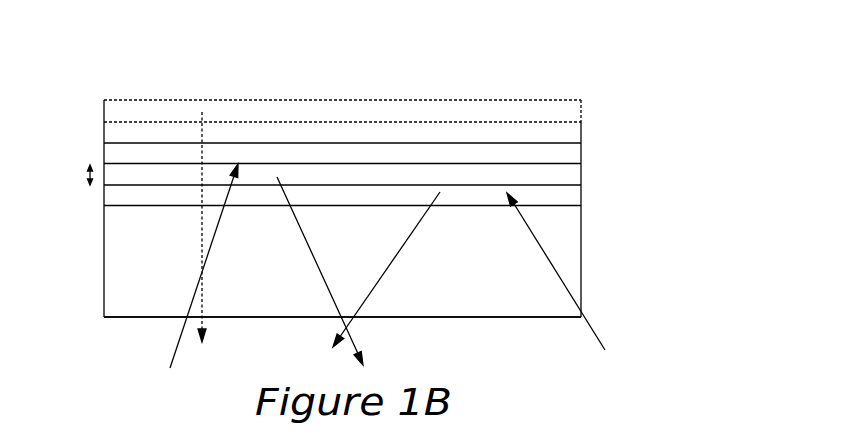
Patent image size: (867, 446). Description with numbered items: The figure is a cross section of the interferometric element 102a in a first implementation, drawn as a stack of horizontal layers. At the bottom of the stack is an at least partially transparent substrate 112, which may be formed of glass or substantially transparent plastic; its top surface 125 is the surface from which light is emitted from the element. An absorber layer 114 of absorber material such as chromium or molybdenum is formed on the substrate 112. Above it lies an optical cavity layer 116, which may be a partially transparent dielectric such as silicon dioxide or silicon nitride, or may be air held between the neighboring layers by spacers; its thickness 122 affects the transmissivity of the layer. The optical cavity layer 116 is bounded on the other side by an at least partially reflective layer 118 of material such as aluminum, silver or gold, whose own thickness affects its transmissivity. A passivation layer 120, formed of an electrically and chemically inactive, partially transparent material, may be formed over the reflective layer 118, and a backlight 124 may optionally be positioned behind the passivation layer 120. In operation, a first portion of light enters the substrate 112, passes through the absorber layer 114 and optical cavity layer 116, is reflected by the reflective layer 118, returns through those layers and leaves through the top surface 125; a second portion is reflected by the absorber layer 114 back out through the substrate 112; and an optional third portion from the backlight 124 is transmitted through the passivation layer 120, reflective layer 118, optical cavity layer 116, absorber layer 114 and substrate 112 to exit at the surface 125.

The interferometric element 102a is at (624, 76).
The backlight 124 is at (581, 102).
The passivation layer 120 is at (581, 128).
The reflective layer 118 is at (581, 147).
The optical cavity layer 116 is at (581, 173).
The absorber layer 114 is at (581, 195).
The substrate 112 is at (581, 265).
The thickness 122 is at (72, 175).
The surface 125 is at (138, 317).